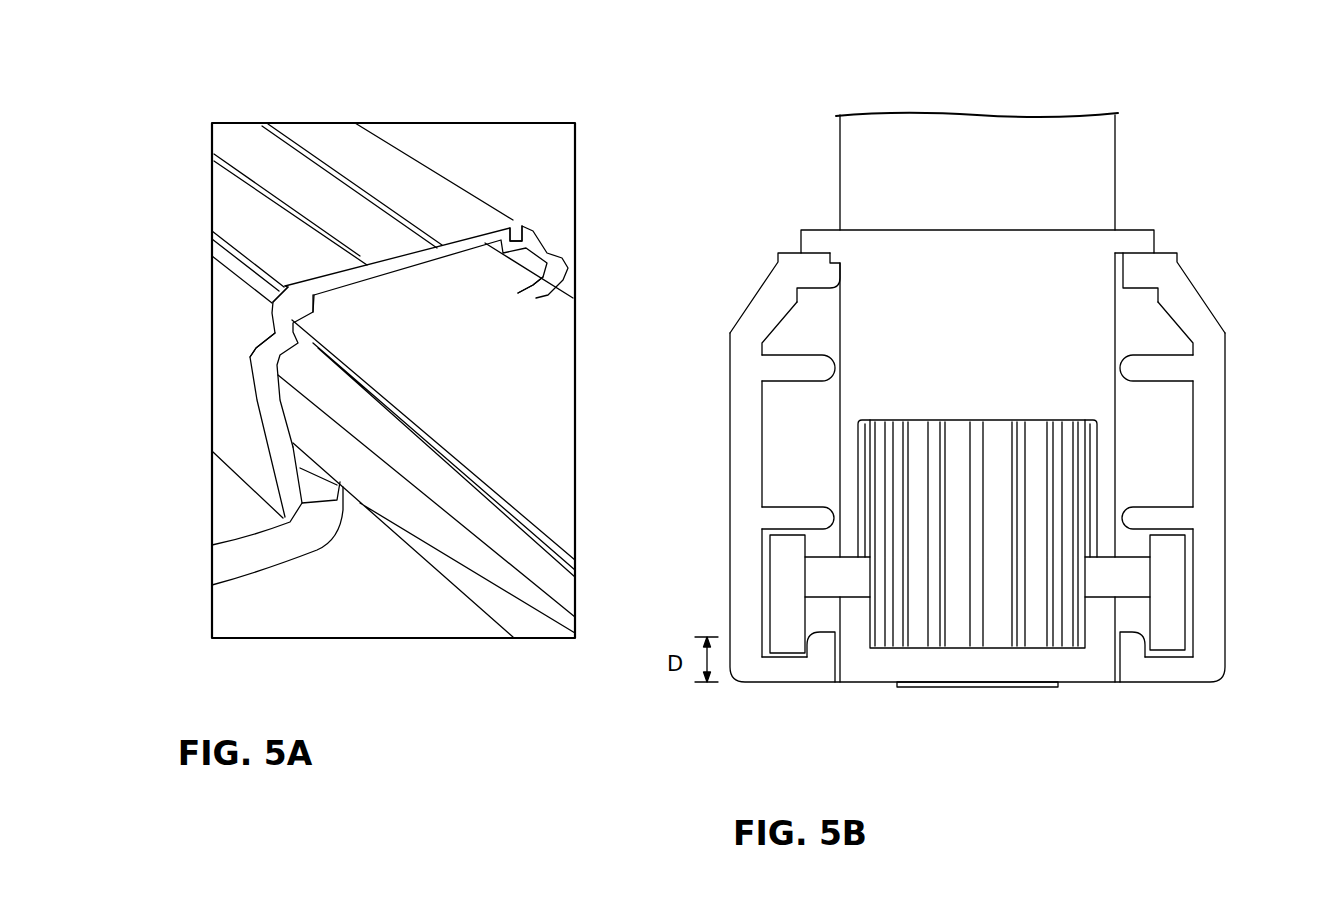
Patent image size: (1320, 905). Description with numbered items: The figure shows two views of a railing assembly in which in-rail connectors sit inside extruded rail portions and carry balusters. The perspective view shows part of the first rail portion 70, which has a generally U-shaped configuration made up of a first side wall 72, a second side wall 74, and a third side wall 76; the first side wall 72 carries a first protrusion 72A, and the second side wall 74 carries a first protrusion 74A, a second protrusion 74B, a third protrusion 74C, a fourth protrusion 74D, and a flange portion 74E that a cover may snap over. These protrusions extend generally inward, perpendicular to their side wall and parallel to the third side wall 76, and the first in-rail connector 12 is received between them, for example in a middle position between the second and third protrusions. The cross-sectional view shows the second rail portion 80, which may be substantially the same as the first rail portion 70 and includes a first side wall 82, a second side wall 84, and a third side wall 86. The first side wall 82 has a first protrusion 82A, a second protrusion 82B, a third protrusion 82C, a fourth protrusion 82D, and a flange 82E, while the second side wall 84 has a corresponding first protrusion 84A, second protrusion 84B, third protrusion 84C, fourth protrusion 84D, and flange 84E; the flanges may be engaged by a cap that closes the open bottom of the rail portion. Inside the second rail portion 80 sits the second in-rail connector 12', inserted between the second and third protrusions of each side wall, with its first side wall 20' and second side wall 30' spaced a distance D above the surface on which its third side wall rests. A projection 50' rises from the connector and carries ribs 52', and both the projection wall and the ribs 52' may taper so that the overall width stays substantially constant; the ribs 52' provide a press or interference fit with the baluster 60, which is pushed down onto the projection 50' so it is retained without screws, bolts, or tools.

In FIG. 5A, the first rail portion 70 is at (486, 178).
In FIG. 5A, the third side wall 76 is at (295, 177).
In FIG. 5A, the first side wall 72 is at (552, 242).
In FIG. 5A, the first protrusion 72A is at (512, 240).
In FIG. 5A, the second side wall 74 is at (250, 417).
In FIG. 5A, the first protrusion 74A is at (300, 303).
In FIG. 5A, the second protrusion 74B is at (535, 292).
In FIG. 5A, the third protrusion 74C is at (290, 455).
In FIG. 5A, the fourth protrusion 74D is at (212, 545).
In FIG. 5A, the flange portion 74E is at (212, 585).
In FIG. 5A, the first in-rail connector 12 is at (419, 440).
In FIG. 5B, the baluster 60 is at (1098, 170).
In FIG. 5B, the third side wall 86 is at (983, 240).
In FIG. 5B, the second rail portion 80 is at (1228, 372).
In FIG. 5B, the first side wall 82 is at (777, 456).
In FIG. 5B, the first protrusion 82A is at (827, 275).
In FIG. 5B, the second protrusion 82B is at (793, 367).
In FIG. 5B, the third protrusion 82C is at (790, 518).
In FIG. 5B, the fourth protrusion 82D is at (793, 668).
In FIG. 5B, the flange 82E is at (822, 650).
In FIG. 5B, the second side wall 84 is at (1199, 477).
In FIG. 5B, the first protrusion 84A is at (1138, 277).
In FIG. 5B, the second protrusion 84B is at (1157, 365).
In FIG. 5B, the third protrusion 84C is at (1157, 517).
In FIG. 5B, the fourth protrusion 84D is at (1178, 665).
In FIG. 5B, the flange 84E is at (1132, 650).
In FIG. 5B, the first side wall 20' is at (764, 587).
In FIG. 5B, the second side wall 30' is at (1183, 568).
In FIG. 5B, the projection 50' is at (977, 492).
In FIG. 5B, the ribs 52' is at (977, 498).
In FIG. 5B, the second in-rail connector 12' is at (995, 715).